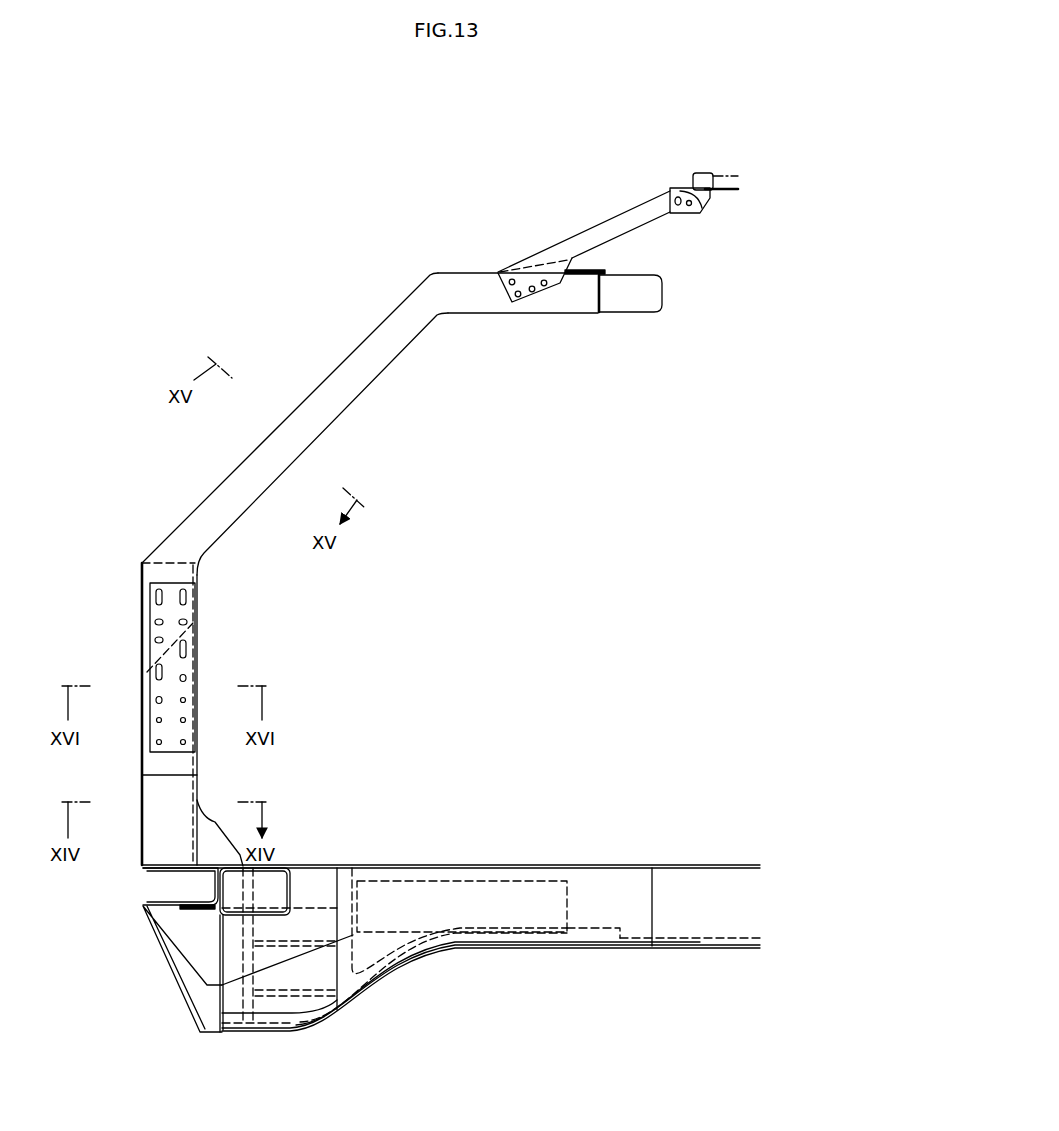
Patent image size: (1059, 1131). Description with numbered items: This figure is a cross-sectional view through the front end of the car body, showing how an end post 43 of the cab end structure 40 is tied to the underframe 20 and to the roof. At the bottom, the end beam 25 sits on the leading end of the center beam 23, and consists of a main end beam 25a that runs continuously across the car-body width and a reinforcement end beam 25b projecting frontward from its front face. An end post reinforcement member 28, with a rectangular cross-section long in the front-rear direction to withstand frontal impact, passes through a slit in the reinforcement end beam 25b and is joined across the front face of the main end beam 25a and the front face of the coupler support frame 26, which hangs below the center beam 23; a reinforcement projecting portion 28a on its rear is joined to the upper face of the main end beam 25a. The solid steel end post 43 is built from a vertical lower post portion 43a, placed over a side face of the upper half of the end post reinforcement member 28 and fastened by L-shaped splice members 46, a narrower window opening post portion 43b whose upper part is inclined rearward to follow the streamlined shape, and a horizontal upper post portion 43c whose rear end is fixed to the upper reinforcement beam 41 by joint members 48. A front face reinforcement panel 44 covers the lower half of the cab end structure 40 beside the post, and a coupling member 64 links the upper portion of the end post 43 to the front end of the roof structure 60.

The underframe 20 is at (690, 856).
The center beam 23 is at (655, 950).
The end beam 25 is at (178, 914).
The main end beam 25a is at (290, 893).
The reinforcement end beam 25b is at (143, 897).
The coupler support frame 26 is at (335, 1012).
The end post reinforcement member 28 is at (148, 790).
The reinforcement projecting portion 28a is at (212, 830).
The cab end structure 40 is at (454, 152).
The upper reinforcement beam 41 is at (645, 300).
The end post 43 is at (338, 350).
The lower post portion 43a is at (197, 660).
The window opening post portion 43b is at (348, 398).
The upper post portion 43c is at (553, 300).
The front face reinforcement panel 44 is at (142, 660).
The splice member 46 is at (170, 583).
The joint member 48 is at (592, 272).
The roof structure 60 is at (706, 173).
The coupling member 64 is at (620, 222).